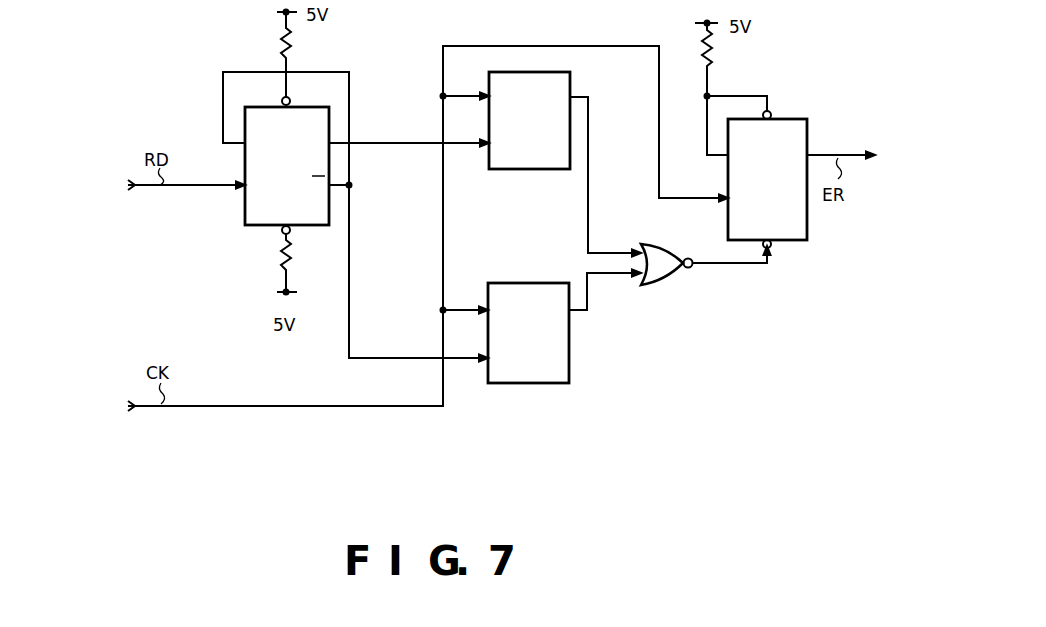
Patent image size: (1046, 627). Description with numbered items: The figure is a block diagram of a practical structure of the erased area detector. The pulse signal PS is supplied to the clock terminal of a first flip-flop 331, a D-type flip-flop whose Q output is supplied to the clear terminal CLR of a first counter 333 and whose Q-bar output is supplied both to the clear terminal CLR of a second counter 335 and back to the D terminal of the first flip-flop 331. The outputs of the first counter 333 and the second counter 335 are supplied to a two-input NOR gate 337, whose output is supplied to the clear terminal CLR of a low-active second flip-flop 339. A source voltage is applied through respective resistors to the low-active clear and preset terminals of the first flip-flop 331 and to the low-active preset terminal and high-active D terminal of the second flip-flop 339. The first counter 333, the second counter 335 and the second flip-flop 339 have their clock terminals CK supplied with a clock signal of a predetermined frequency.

The first flip-flop 331 is at (256, 227).
The first counter 333 is at (570, 84).
The second counter 335 is at (552, 385).
The two-input NOR gate 337 is at (665, 273).
The second flip-flop 339 is at (807, 230).